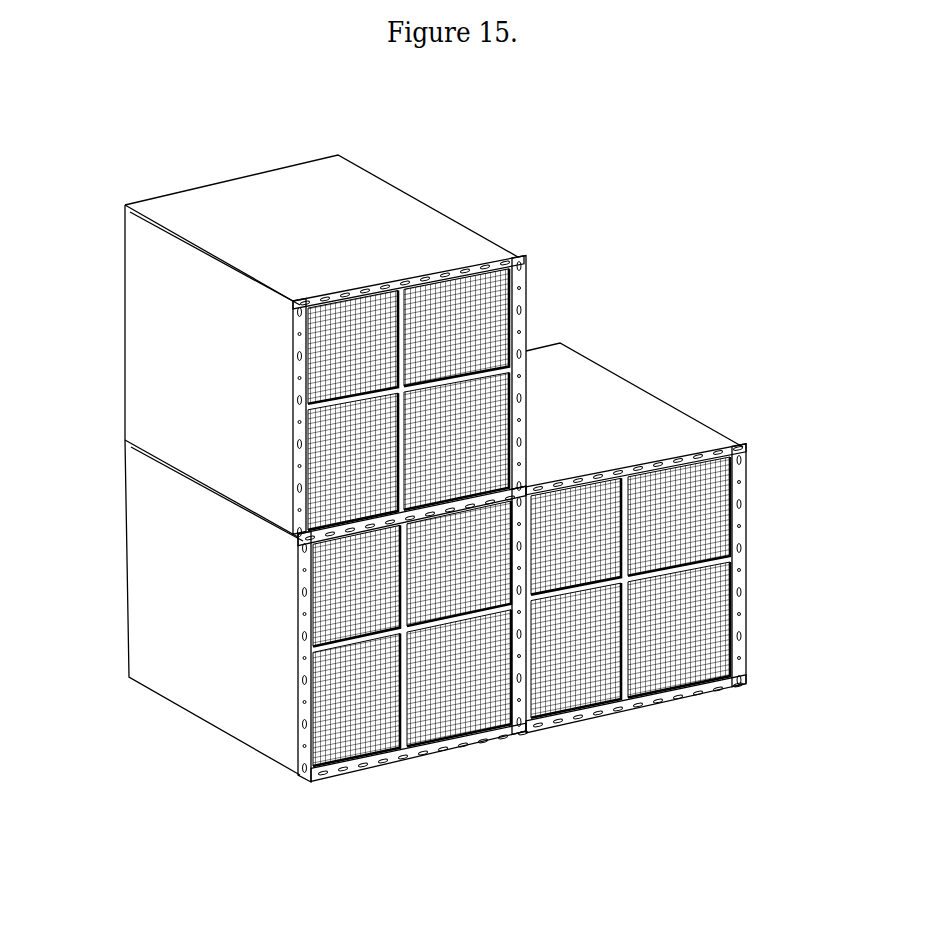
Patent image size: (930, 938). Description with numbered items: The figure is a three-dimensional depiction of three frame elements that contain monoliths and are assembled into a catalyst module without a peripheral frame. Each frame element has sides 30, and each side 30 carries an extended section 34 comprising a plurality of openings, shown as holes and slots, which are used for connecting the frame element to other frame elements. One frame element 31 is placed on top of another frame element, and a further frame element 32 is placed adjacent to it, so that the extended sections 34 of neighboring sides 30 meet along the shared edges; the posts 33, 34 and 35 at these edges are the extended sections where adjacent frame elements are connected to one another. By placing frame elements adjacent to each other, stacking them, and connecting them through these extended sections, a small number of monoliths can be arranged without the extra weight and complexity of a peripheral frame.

The side 30 is at (308, 628).
The stacked container module 31 is at (223, 355).
The adjacent container module 32 is at (660, 538).
The corner post 33 is at (740, 689).
The extended section 34 is at (298, 777).
The shared corner post 35 is at (532, 736).